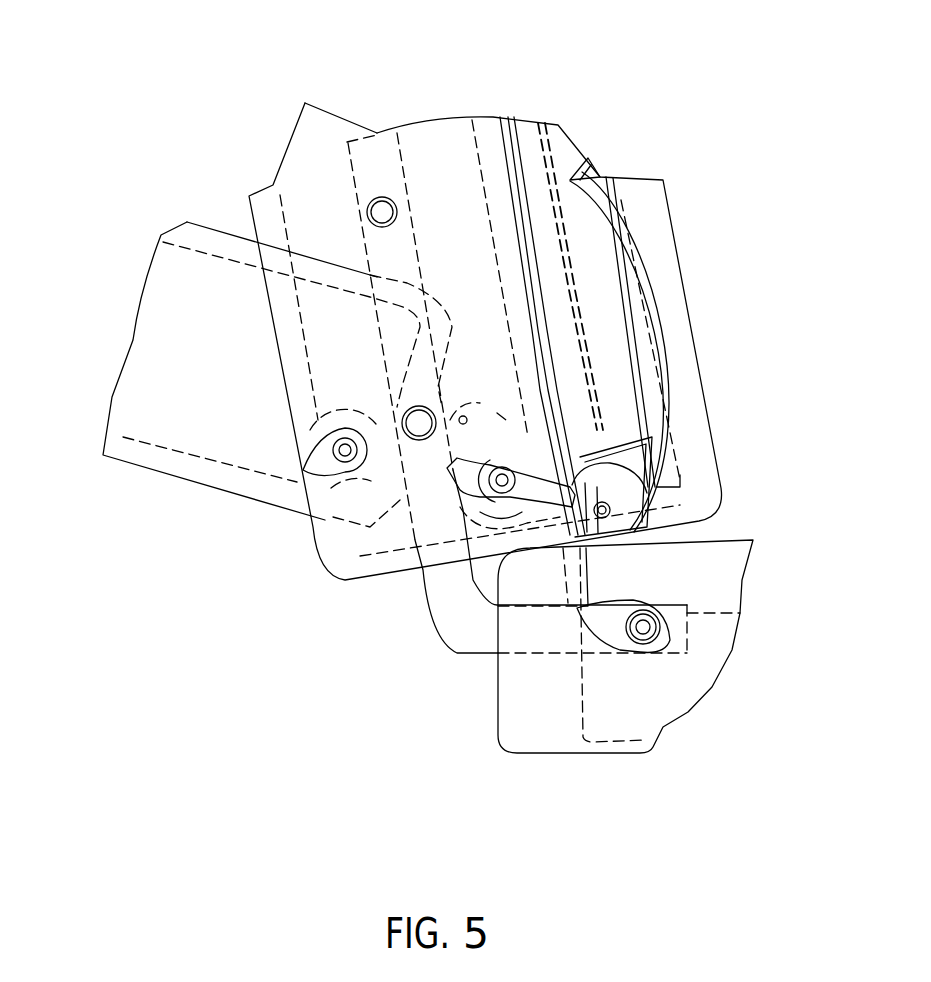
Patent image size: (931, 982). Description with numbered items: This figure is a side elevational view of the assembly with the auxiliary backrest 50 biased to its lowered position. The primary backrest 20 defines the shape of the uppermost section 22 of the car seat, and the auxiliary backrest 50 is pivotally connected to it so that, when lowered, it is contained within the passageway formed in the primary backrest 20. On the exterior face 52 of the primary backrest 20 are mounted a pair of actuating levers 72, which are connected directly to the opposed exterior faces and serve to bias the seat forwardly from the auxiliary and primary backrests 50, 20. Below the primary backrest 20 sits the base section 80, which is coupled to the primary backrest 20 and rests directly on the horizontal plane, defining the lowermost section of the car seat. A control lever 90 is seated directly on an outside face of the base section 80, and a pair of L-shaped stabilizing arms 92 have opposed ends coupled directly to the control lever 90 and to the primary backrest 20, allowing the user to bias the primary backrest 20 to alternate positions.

The primary backrest 20 is at (440, 167).
The uppermost section 22 is at (480, 170).
The auxiliary backrest 50 is at (175, 467).
The exterior face 52 is at (300, 470).
The actuating levers 72 is at (457, 468).
The base section 80 is at (558, 737).
The control lever 90 is at (668, 638).
The L-shaped stabilizing arms 92 is at (461, 627).